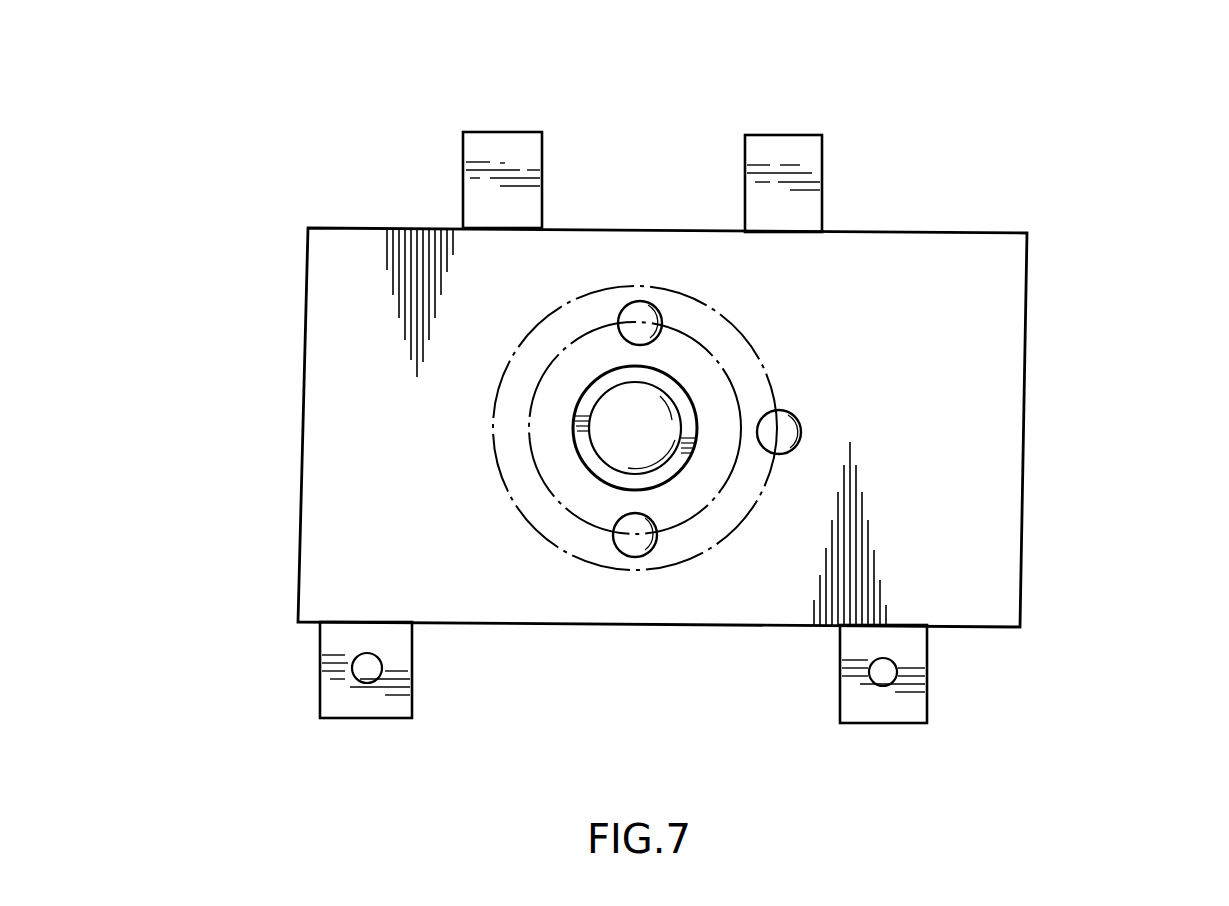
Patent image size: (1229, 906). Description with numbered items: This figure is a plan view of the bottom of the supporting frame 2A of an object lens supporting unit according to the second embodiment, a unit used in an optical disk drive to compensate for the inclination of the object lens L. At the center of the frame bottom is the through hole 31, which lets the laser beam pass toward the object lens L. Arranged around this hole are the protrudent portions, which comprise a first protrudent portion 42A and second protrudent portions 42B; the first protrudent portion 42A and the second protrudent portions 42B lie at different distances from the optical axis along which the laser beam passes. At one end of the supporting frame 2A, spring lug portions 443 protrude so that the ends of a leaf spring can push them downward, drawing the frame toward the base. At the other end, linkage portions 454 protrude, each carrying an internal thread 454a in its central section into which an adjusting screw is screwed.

The supporting frame 2A is at (995, 487).
The spring lug portions 443 is at (480, 132).
The linkage portion 454 is at (320, 705).
The internal thread 454a is at (345, 652).
The through hole 31 is at (660, 478).
The object lens L is at (650, 402).
The second protrudent portions 42B is at (640, 310).
The first protrudent portion 42A is at (800, 415).